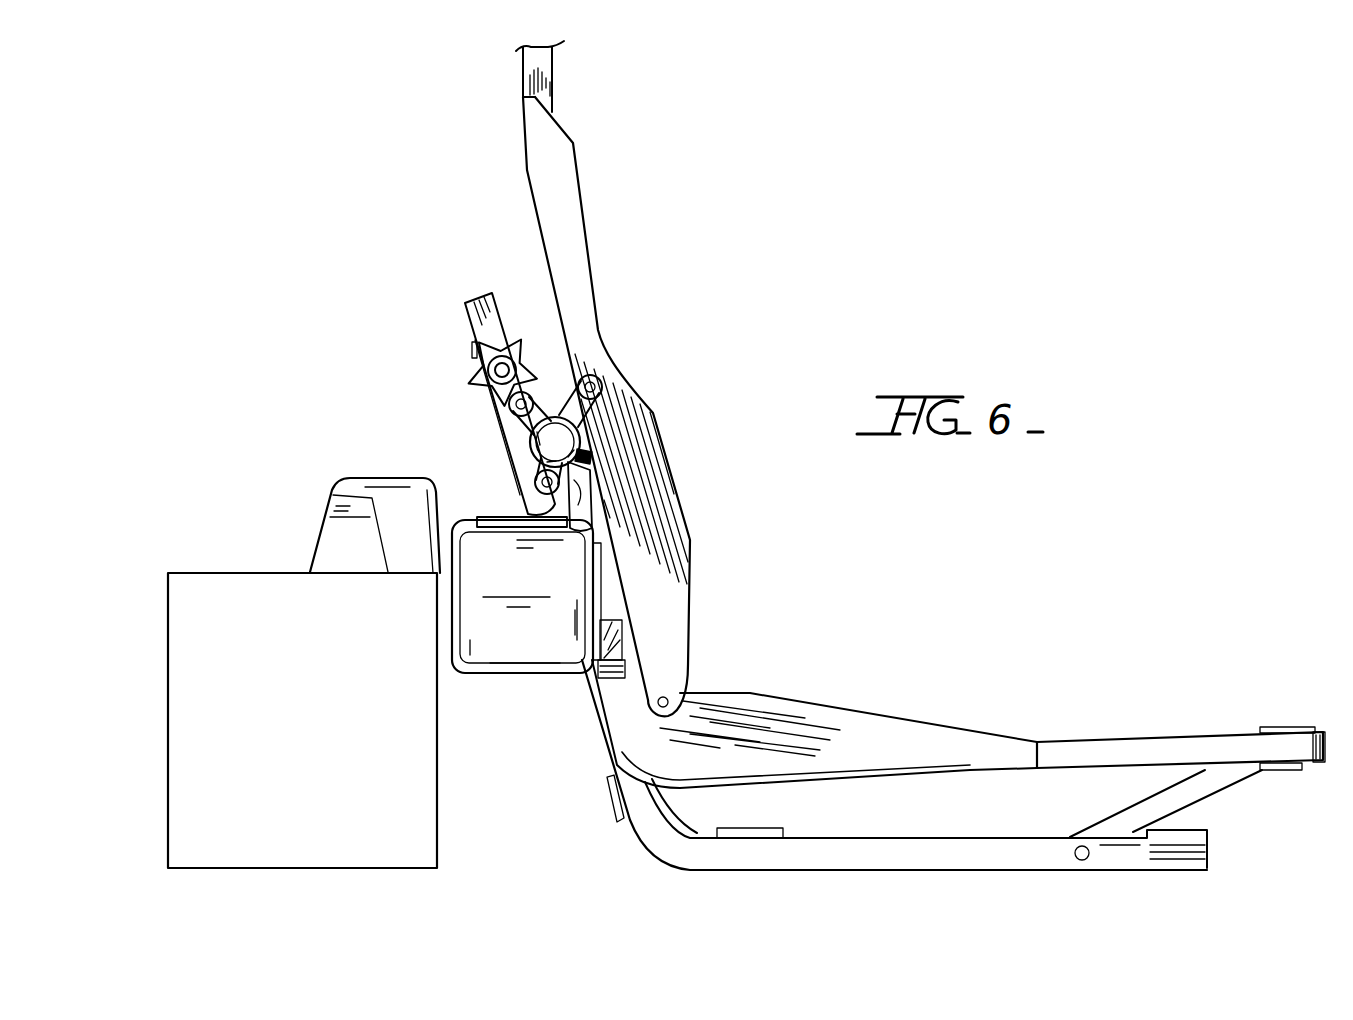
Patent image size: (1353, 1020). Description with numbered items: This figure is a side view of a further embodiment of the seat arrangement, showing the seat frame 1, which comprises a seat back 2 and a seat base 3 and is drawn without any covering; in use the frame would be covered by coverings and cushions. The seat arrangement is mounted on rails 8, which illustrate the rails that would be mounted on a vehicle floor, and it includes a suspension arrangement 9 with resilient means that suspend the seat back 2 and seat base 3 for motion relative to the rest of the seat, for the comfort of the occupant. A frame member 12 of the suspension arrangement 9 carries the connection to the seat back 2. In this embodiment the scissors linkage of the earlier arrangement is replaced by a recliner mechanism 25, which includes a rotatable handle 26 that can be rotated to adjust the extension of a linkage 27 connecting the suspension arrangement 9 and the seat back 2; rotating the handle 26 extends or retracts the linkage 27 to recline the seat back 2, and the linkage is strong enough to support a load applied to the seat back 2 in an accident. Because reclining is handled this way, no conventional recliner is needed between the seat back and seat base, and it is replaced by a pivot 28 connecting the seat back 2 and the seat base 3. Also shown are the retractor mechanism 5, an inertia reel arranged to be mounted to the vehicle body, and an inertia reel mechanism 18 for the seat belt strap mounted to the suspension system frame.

The seat frame 1 is at (600, 216).
The seat back 2 is at (545, 92).
The seat base 3 is at (1067, 750).
The retractor mechanism 5 is at (388, 510).
The rails 8 is at (1010, 853).
The suspension arrangement 9 is at (610, 672).
The frame member 12 is at (540, 507).
The inertia reel mechanism 18 is at (535, 628).
The recliner mechanism 25 is at (600, 457).
The rotatable handle 26 is at (560, 440).
The linkage 27 is at (537, 417).
The pivot 28 is at (680, 670).